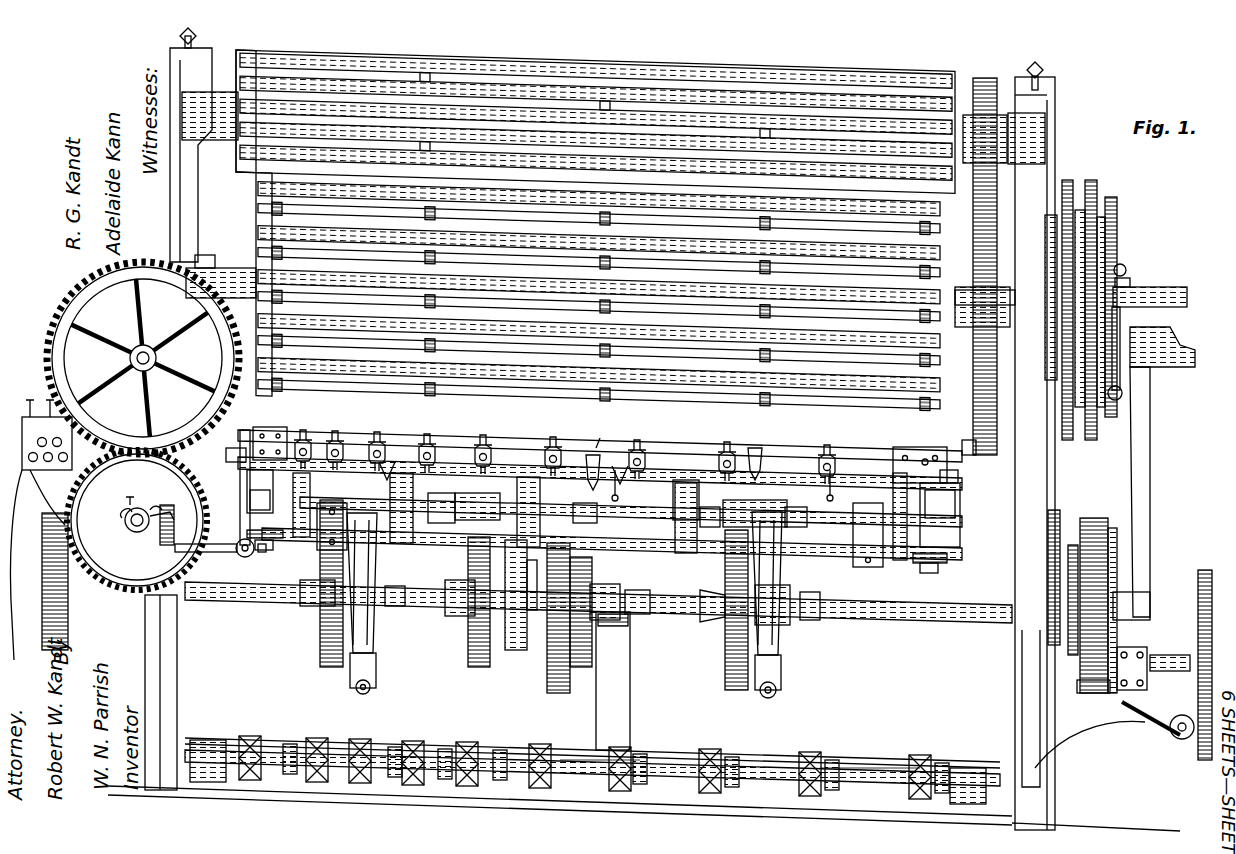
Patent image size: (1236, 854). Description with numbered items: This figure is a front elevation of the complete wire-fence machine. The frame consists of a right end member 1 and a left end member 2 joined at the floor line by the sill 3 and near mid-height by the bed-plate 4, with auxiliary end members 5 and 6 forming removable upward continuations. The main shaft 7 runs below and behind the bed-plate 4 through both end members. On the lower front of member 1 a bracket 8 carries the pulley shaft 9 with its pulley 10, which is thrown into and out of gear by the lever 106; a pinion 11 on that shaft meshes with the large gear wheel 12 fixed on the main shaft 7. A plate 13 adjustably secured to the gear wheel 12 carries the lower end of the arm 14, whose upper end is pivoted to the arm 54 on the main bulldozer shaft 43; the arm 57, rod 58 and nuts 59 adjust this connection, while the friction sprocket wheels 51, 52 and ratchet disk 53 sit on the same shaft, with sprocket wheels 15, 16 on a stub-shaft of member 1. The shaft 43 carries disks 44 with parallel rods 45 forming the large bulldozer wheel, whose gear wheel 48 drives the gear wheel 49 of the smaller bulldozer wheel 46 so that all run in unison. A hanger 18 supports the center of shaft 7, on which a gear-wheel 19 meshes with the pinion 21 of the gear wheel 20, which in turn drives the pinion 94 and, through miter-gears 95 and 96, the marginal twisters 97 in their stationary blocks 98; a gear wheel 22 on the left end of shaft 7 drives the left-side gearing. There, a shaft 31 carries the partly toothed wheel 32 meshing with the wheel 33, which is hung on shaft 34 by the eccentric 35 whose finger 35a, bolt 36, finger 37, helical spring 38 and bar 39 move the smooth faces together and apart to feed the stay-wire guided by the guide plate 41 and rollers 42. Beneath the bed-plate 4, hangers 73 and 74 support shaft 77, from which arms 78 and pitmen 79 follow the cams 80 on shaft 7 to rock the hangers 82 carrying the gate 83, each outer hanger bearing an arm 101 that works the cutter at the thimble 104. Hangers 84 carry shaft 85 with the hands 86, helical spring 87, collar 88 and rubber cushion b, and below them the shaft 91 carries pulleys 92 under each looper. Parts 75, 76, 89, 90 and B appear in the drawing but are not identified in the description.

The end member 1 is at (1096, 454).
The end member 2 is at (560, 710).
The sill 3 is at (872, 760).
The bed-plate 4 is at (248, 428).
The auxiliary end member 5 is at (1001, 183).
The auxiliary end member 6 is at (204, 145).
The main shaft 7 is at (245, 603).
The bracket 8 is at (1085, 725).
The pulley shaft 9 is at (1165, 655).
The pulley 10 is at (1198, 762).
The pinion 11 is at (1095, 692).
The large gear wheel 12 is at (1095, 518).
The plate 13 is at (1113, 528).
The arm 14 is at (1150, 477).
The sprocket wheel 15 is at (1052, 510).
The sprocket wheel 16 is at (1072, 545).
The hanger 18 is at (613, 681).
The gear-wheel 19 is at (582, 668).
The gear wheel 20 is at (556, 692).
The pinion 21 is at (625, 625).
The gear wheel 22 is at (70, 600).
The shaft 31 is at (118, 352).
The wheel 32 is at (142, 358).
The wheel 33 is at (135, 590).
The shaft 34 is at (133, 530).
The eccentric 35 is at (125, 516).
The finger 35a is at (154, 508).
The bolt 36 is at (160, 545).
The finger 37 is at (200, 555).
The helical spring 38 is at (172, 518).
The bar 39 is at (242, 557).
The guide plate 41 is at (40, 415).
The rollers 42 is at (50, 470).
The main bulldozer shaft 43 is at (236, 268).
The disks 44 is at (599, 287).
The tubes, pipes or rods 45 is at (520, 342).
The smaller bulldozer wheel 46 is at (758, 62).
The gear wheel 48 is at (979, 435).
The gear wheel 49 is at (985, 80).
The frictional contact sprocket wheel 51 is at (1068, 180).
The frictional contact sprocket wheel 52 is at (1092, 180).
The ratchet disk 53 is at (1117, 222).
The arm 54 is at (1197, 347).
The arm 57 is at (1172, 287).
The rod 58 is at (1126, 268).
The nuts 59 is at (1132, 282).
The hangers 73 is at (617, 510).
The hangers 74 is at (600, 535).
The gear 75 is at (480, 668).
The collar 76 is at (523, 595).
The shaft 77 is at (830, 552).
The arm 78 is at (380, 640).
The pitman 79 is at (368, 690).
The cam 80 is at (325, 668).
The arms or hangers 82 is at (598, 529).
The gate 83 is at (470, 432).
The hangers 84 is at (790, 455).
The shaft 85 is at (680, 457).
The hands 86 is at (828, 445).
The helical spring 87 is at (755, 513).
The collar 88 is at (755, 460).
The block 89 is at (684, 503).
The arm 90 is at (728, 494).
The shaft 91 is at (665, 760).
The pulleys 92 is at (925, 760).
The pinion 94 is at (533, 576).
The miter-gear 95 is at (245, 532).
The miter-gear 96 is at (966, 577).
The marginal twister 97 is at (975, 497).
The stationary block 98 is at (602, 500).
The arm 101 is at (925, 458).
The thimble 104 is at (252, 440).
The lever 106 is at (1160, 735).
The lever B is at (37, 565).
The rubber cushion b is at (601, 432).